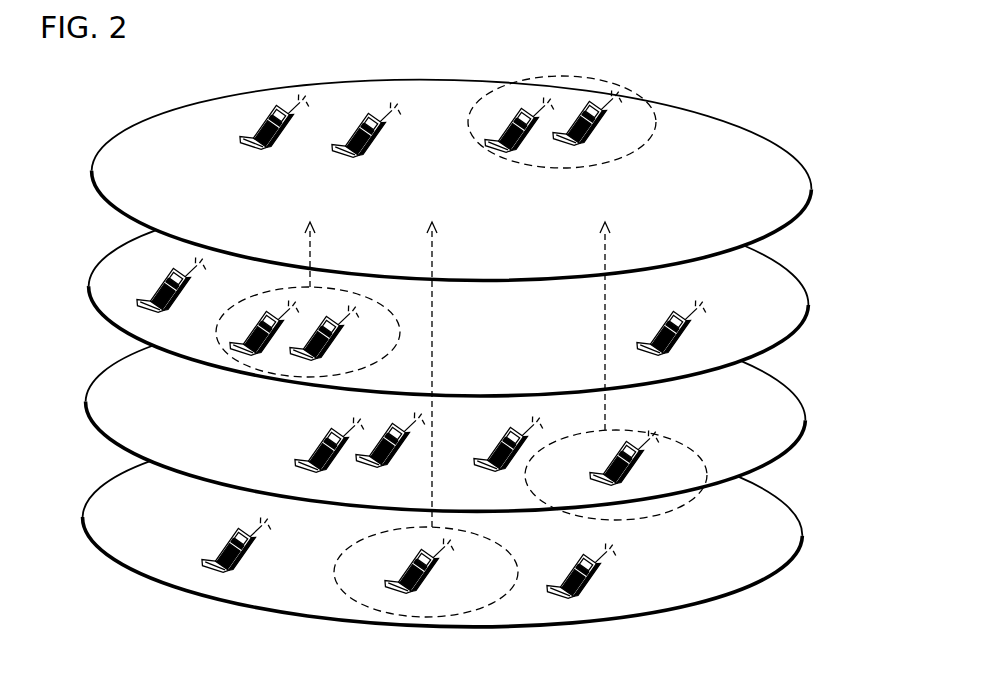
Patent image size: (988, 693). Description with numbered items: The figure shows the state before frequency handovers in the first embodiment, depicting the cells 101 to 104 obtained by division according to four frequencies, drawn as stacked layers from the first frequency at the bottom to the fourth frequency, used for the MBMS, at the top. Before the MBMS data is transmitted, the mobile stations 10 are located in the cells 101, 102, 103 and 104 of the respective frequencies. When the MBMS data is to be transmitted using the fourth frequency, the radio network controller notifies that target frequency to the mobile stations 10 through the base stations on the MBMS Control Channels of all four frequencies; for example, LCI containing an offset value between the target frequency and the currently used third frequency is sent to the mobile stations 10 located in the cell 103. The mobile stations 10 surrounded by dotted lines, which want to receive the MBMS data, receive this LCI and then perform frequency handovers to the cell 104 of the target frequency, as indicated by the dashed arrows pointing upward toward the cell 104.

The mobile station 10 is at (248, 140).
The cell 101 is at (777, 492).
The cell 102 is at (777, 378).
The cell 103 is at (782, 262).
The cell 104 is at (785, 142).